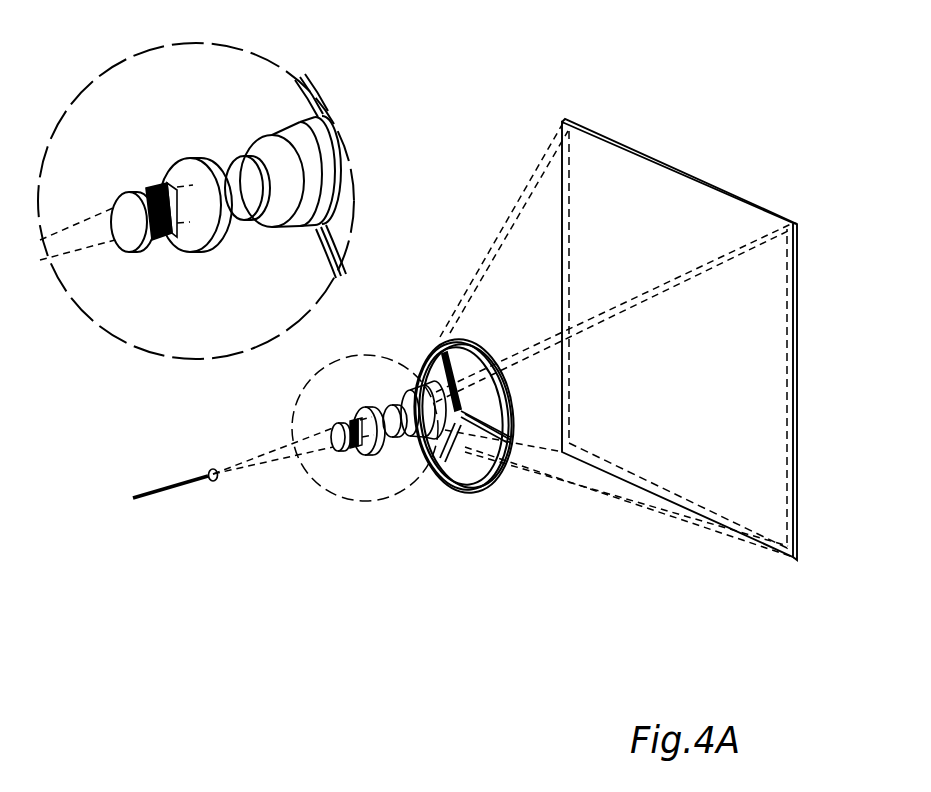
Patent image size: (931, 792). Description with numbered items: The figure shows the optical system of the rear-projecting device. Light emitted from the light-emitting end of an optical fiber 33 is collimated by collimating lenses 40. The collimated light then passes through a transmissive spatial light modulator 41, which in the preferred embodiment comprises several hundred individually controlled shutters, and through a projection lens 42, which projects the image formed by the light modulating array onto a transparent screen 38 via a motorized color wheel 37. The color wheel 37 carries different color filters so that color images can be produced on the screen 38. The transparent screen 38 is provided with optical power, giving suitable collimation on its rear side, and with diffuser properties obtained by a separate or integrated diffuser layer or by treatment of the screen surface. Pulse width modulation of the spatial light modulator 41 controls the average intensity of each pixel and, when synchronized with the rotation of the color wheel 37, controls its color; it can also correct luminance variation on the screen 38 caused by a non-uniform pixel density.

The optical fiber 33 is at (150, 498).
The color wheel 37 is at (485, 493).
The transparent screen 38 is at (645, 205).
The collimating lenses 40 is at (220, 480).
The transmissive spatial light modulator 41 is at (158, 187).
The projection lens 42 is at (247, 150).